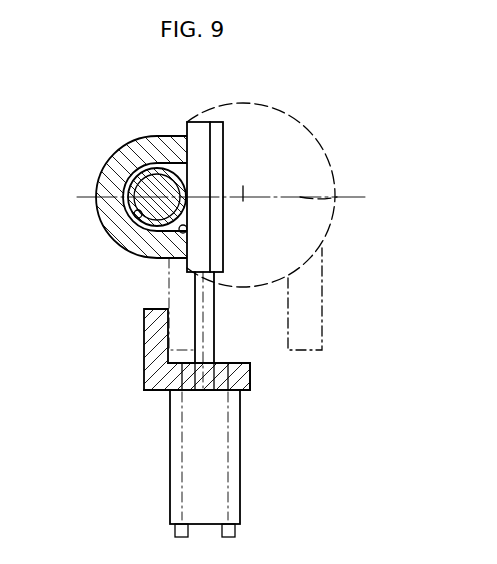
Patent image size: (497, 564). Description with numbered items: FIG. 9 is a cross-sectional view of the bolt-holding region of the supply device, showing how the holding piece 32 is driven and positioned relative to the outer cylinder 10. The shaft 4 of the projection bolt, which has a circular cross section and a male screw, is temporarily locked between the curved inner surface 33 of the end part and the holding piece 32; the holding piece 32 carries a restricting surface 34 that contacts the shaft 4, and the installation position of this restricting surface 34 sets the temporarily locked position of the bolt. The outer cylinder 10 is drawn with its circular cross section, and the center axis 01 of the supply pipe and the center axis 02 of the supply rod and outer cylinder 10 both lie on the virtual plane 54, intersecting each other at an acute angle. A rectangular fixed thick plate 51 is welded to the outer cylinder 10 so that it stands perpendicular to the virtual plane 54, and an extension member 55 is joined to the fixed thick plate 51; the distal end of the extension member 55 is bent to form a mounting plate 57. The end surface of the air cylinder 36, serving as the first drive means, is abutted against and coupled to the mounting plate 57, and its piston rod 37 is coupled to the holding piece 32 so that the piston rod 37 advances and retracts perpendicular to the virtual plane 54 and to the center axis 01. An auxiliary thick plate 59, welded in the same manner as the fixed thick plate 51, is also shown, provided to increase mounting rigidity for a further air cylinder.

The shaft 4 is at (147, 162).
The holding piece 32 is at (201, 130).
The inner surface 33 is at (120, 221).
The restricting surface 34 is at (183, 232).
The center axis O1 01 is at (157, 196).
The center axis O2 02 is at (244, 187).
The outer cylinder 10 is at (327, 132).
The virtual plane 54 is at (313, 198).
The auxiliary thick plate 59 is at (323, 282).
The piston rod 37 is at (216, 318).
The fixed thick plate 51 is at (169, 285).
The extension member 55 is at (152, 330).
The mounting plate 57 is at (243, 375).
The air cylinder 36 is at (242, 457).